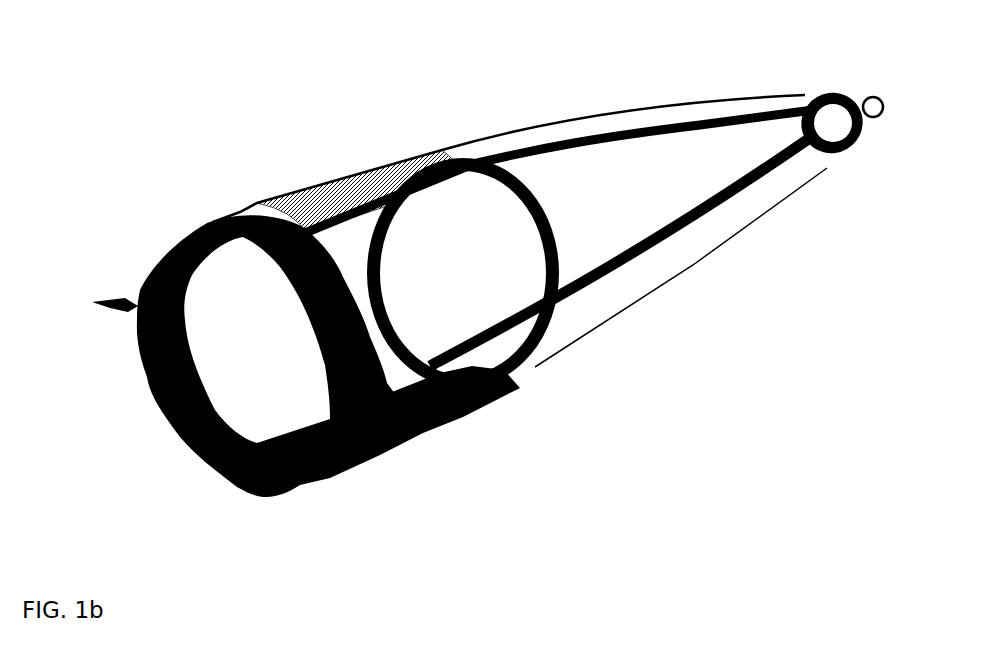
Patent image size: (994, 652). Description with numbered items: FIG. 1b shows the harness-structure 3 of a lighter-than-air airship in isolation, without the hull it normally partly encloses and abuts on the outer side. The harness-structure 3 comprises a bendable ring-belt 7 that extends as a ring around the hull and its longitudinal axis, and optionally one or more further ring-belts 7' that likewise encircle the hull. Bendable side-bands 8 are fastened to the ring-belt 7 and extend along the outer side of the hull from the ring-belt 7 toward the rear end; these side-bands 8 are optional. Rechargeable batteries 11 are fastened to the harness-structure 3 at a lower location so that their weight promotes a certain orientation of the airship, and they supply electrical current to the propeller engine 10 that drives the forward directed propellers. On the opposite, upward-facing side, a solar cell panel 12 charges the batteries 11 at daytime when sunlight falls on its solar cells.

The harness-structure 3 is at (470, 295).
The ring-belt 7 is at (228, 310).
The further ring-belt 7' is at (531, 312).
The side-bands 8 is at (582, 118).
The propeller engine 10 is at (113, 314).
The rechargeable batteries 11 is at (347, 458).
The solar cell panel 12 is at (370, 187).